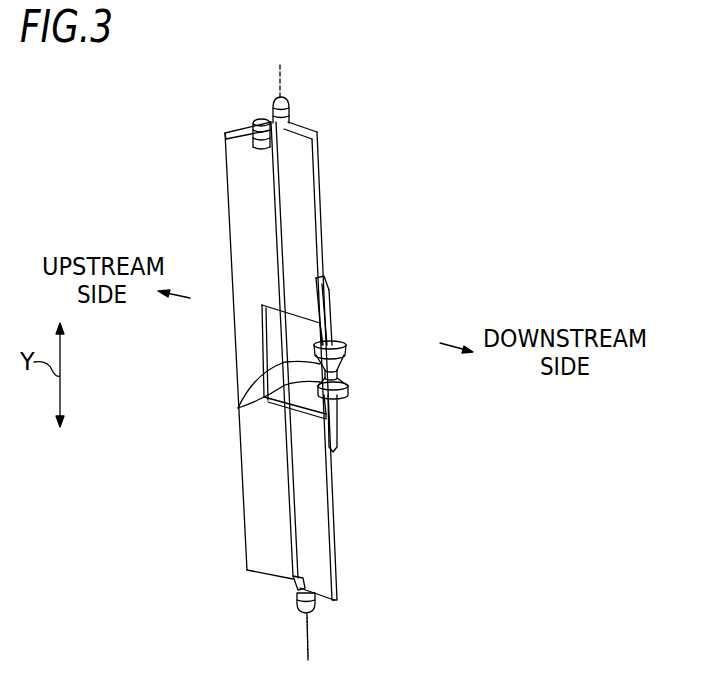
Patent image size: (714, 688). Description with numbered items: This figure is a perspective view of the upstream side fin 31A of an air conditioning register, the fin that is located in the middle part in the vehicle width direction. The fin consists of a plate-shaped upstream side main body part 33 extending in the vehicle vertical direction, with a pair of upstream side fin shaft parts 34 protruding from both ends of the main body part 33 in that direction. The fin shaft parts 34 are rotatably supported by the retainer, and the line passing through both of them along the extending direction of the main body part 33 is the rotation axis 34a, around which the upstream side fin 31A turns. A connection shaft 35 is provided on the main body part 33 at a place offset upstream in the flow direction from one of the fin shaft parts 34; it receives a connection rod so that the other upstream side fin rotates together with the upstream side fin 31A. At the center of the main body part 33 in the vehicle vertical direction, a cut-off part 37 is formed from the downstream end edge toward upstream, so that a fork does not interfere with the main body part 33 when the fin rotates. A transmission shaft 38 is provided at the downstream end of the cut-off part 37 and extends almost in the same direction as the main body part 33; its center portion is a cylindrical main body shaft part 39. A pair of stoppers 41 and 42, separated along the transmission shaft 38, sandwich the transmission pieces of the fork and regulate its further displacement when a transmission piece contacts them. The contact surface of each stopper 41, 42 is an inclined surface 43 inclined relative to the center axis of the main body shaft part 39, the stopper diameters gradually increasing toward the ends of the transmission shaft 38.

The upstream side fin 31A is at (375, 154).
The upstream side main body part 33 is at (252, 478).
The upstream side fin shaft parts 34 is at (291, 117).
The rotation axis 34a is at (308, 636).
The connection shaft 35 is at (257, 121).
The cut-off part 37 is at (287, 335).
The transmission shaft 38 is at (346, 297).
The main body shaft part 39 is at (338, 371).
The stopper 41 is at (341, 342).
The stopper 42 is at (350, 396).
The inclined surface 43 is at (238, 408).